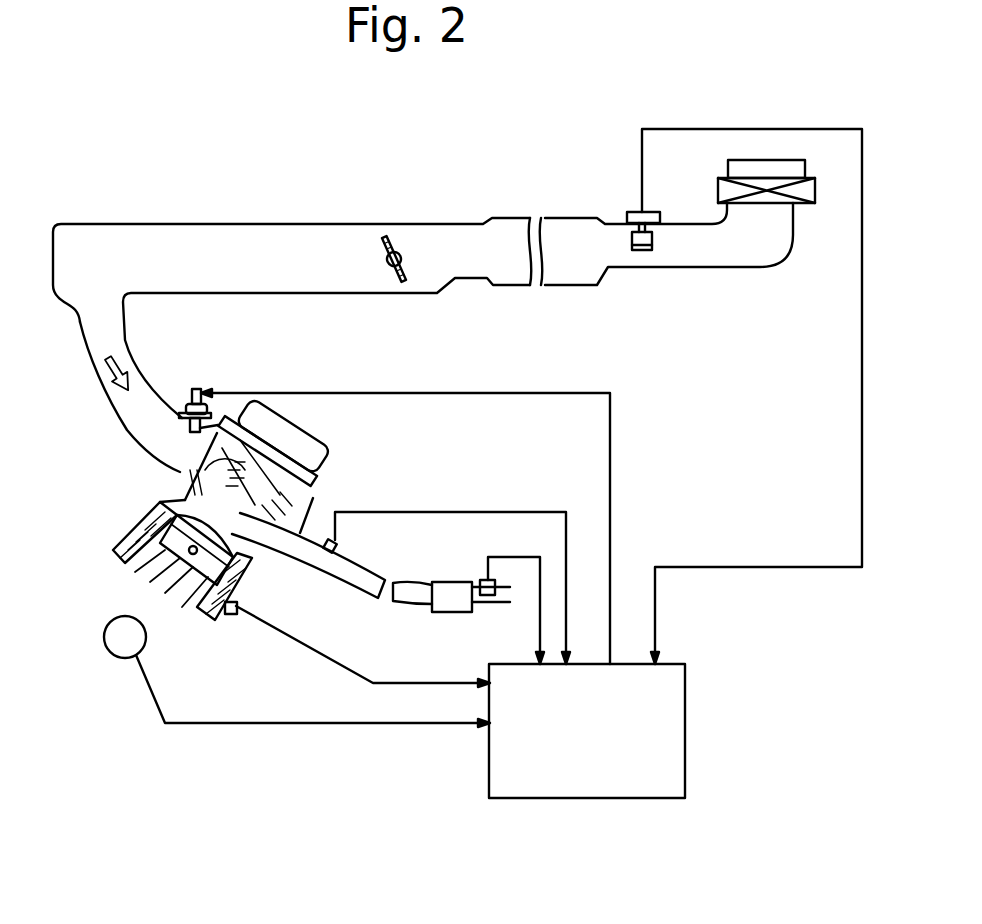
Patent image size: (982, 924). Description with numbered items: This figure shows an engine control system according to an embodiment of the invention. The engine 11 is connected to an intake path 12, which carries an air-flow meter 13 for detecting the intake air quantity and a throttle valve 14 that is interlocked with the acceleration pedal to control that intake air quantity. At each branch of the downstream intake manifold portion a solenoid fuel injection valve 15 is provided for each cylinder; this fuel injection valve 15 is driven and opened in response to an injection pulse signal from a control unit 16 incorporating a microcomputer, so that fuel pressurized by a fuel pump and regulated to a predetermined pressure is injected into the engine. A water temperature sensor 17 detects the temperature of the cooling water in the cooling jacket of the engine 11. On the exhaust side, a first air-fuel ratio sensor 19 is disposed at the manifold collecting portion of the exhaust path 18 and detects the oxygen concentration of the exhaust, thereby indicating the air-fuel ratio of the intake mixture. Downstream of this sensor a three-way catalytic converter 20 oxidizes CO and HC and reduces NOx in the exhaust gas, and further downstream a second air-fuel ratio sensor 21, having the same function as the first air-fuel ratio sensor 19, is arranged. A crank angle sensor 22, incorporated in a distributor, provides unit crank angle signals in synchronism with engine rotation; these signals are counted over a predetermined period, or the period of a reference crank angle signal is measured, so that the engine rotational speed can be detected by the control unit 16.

The engine 11 is at (334, 496).
The intake path 12 is at (428, 223).
The air-flow meter 13 is at (628, 211).
The throttle valve 14 is at (396, 285).
The solenoid fuel injection valve 15 is at (182, 394).
The control unit 16 is at (686, 683).
The water temperature sensor 17 is at (234, 612).
The exhaust path 18 is at (329, 578).
The first air-fuel ratio sensor 19 is at (338, 546).
The three-way catalytic converter 20 is at (455, 582).
The second air-fuel ratio sensor 21 is at (498, 603).
The crank angle sensor 22 is at (104, 640).